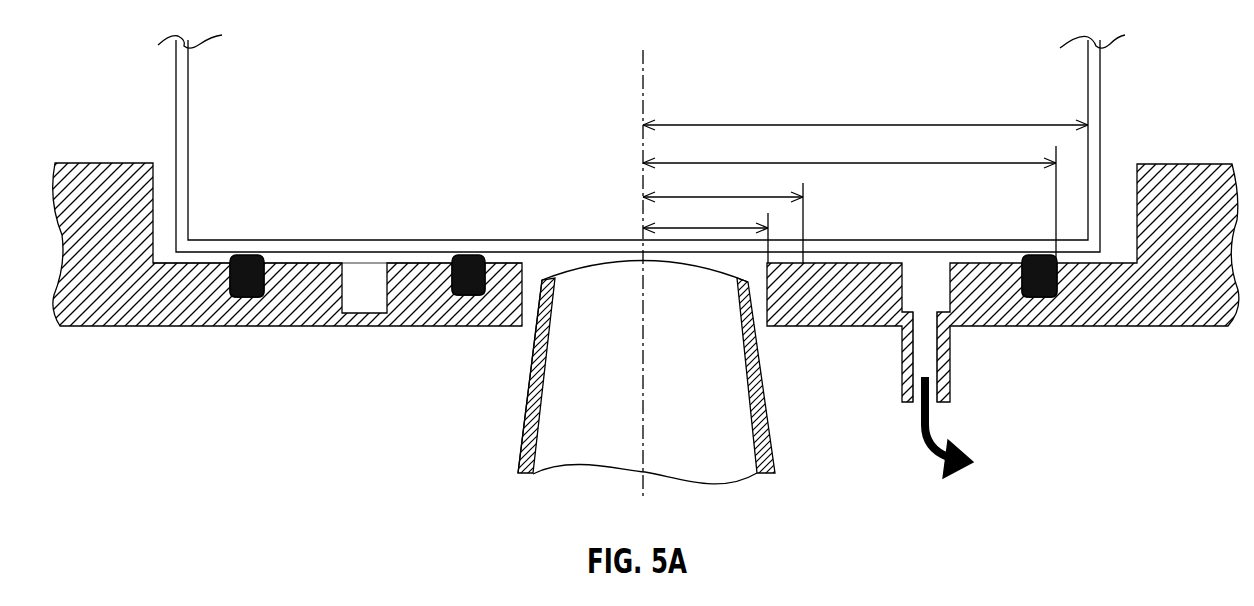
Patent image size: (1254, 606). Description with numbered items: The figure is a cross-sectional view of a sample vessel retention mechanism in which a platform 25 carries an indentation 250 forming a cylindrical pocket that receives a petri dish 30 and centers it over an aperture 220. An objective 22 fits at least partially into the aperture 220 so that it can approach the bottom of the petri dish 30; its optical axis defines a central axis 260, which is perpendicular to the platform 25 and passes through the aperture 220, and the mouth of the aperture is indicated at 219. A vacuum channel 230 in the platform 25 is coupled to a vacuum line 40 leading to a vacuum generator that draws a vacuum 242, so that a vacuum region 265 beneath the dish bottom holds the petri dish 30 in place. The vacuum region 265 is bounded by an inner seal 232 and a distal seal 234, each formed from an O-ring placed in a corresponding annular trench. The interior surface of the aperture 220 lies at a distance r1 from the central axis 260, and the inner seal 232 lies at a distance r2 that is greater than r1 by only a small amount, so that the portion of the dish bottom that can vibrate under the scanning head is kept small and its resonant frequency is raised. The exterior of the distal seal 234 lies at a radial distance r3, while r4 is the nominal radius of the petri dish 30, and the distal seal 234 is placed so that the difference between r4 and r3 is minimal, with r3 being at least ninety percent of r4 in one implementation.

The objective 22 is at (711, 447).
The platform 25 is at (1138, 230).
The petri dish 30 is at (190, 213).
The vacuum line 40 is at (952, 355).
The tube opening 219 is at (547, 268).
The aperture 220 is at (543, 277).
The vacuum channel 230 is at (370, 302).
The inner seal 232 is at (477, 297).
The distal seal 234 is at (247, 297).
The vacuum 242 is at (925, 452).
The indentation 250 is at (1122, 176).
The central axis 260 is at (641, 140).
The vacuum region 265 is at (416, 258).
The distance r1 is at (726, 228).
The distance r2 is at (752, 197).
The radial distance r3 is at (787, 163).
The radial distance r4 is at (832, 125).